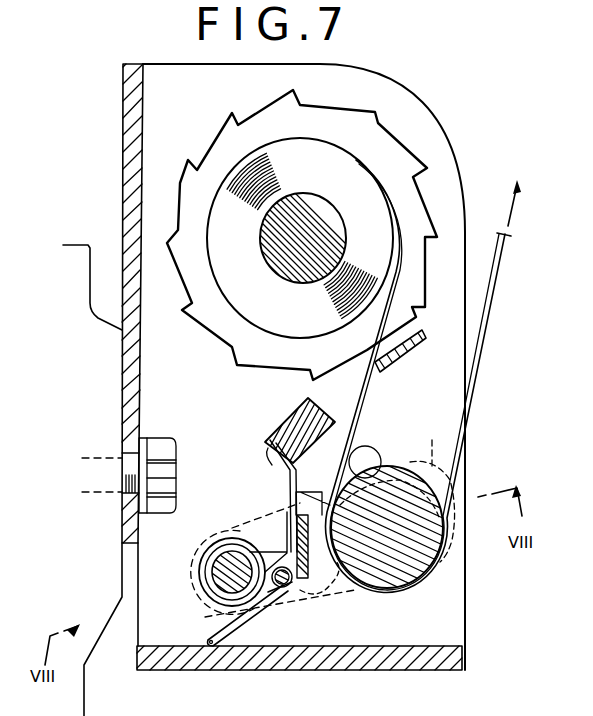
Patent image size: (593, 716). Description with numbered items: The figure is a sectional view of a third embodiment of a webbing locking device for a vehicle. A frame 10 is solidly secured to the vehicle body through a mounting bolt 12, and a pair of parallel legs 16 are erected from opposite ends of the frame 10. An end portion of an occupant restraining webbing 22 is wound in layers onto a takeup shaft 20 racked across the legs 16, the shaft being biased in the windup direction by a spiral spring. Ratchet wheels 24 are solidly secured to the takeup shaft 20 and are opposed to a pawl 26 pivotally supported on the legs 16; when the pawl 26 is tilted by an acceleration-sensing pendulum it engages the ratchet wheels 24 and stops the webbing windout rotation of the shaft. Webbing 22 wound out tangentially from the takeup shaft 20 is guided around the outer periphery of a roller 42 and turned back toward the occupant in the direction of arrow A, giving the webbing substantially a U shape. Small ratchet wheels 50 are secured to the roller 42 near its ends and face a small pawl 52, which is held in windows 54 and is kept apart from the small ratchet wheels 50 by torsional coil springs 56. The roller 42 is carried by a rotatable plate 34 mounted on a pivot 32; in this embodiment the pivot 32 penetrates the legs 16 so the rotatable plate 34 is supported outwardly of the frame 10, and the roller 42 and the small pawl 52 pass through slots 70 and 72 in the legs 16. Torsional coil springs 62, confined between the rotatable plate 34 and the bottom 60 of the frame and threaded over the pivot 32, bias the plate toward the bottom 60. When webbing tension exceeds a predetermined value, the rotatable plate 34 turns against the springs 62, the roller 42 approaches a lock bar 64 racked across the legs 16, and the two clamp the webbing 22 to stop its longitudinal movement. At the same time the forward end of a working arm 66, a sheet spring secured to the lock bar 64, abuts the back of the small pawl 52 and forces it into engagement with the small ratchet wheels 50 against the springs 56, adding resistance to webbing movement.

The frame 10 is at (135, 188).
The mounting bolt 12 is at (165, 452).
The legs 16 is at (413, 128).
The takeup shaft 20 is at (283, 268).
The occupant restraining webbing 22 is at (496, 316).
The ratchet wheels 24 is at (215, 318).
The pawl 26 is at (405, 340).
The pivot 32 is at (218, 584).
The rotatable plate 34 is at (236, 518).
The roller 42 is at (440, 537).
The small ratchet wheels 50 is at (432, 458).
The small pawl 52 is at (328, 585).
The windows 54 is at (310, 496).
The torsional coil springs 56 is at (290, 588).
The bottom of the frame 60 is at (412, 662).
The torsional coil springs 62 is at (230, 636).
The lock bar 64 is at (296, 410).
The working arm 66 is at (287, 488).
The slot 70 is at (368, 446).
The slot 72 is at (268, 556).
The arrow A is at (512, 206).